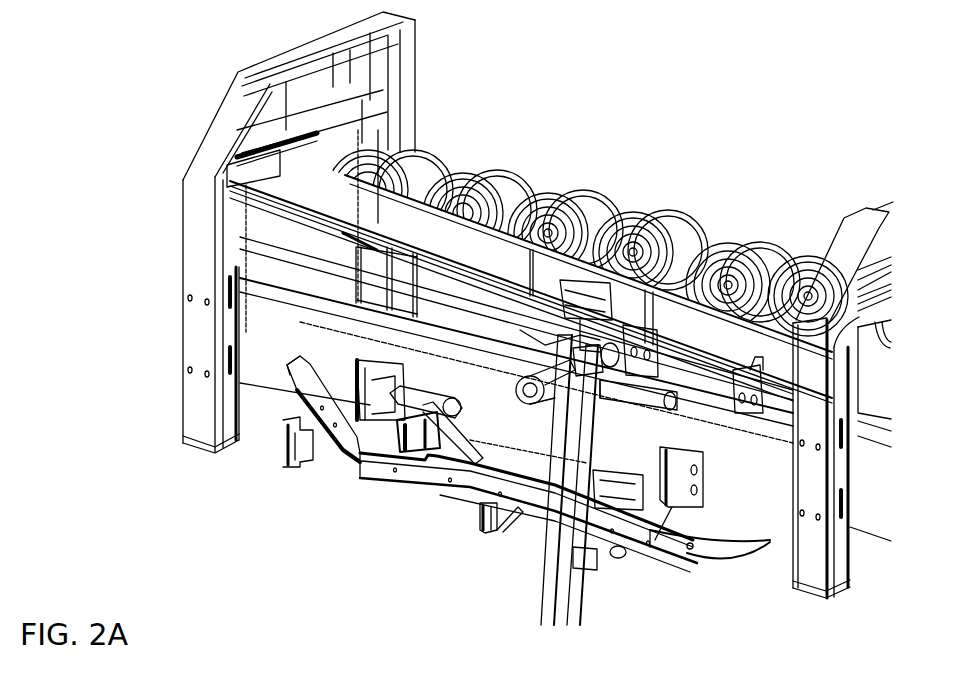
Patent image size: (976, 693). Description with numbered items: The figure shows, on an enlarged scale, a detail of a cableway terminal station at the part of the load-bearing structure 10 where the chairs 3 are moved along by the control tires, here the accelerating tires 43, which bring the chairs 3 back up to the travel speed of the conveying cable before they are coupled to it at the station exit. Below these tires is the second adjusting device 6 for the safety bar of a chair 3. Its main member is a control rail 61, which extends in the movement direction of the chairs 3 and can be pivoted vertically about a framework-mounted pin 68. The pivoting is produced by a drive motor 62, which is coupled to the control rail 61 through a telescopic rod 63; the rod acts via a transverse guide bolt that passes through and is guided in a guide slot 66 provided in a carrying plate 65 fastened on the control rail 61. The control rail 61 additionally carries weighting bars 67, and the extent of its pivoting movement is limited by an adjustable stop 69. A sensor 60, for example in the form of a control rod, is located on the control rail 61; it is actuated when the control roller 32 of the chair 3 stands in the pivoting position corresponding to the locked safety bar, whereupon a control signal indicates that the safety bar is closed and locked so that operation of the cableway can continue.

The chair 3 is at (557, 594).
The second adjusting device 6 is at (368, 558).
The load-bearing structure 10 is at (840, 479).
The control roller 32 is at (630, 560).
The accelerating tires 43 is at (767, 237).
The sensor 60 is at (343, 460).
The control rail 61 is at (462, 493).
The drive motor 62 is at (452, 418).
The telescopic rod 63 is at (477, 457).
The carrying plate 65 is at (512, 522).
The guide slot 66 is at (483, 534).
The weighting bars 67 is at (437, 473).
The framework-mounted pin 68 is at (690, 549).
The adjustable stop 69 is at (287, 452).